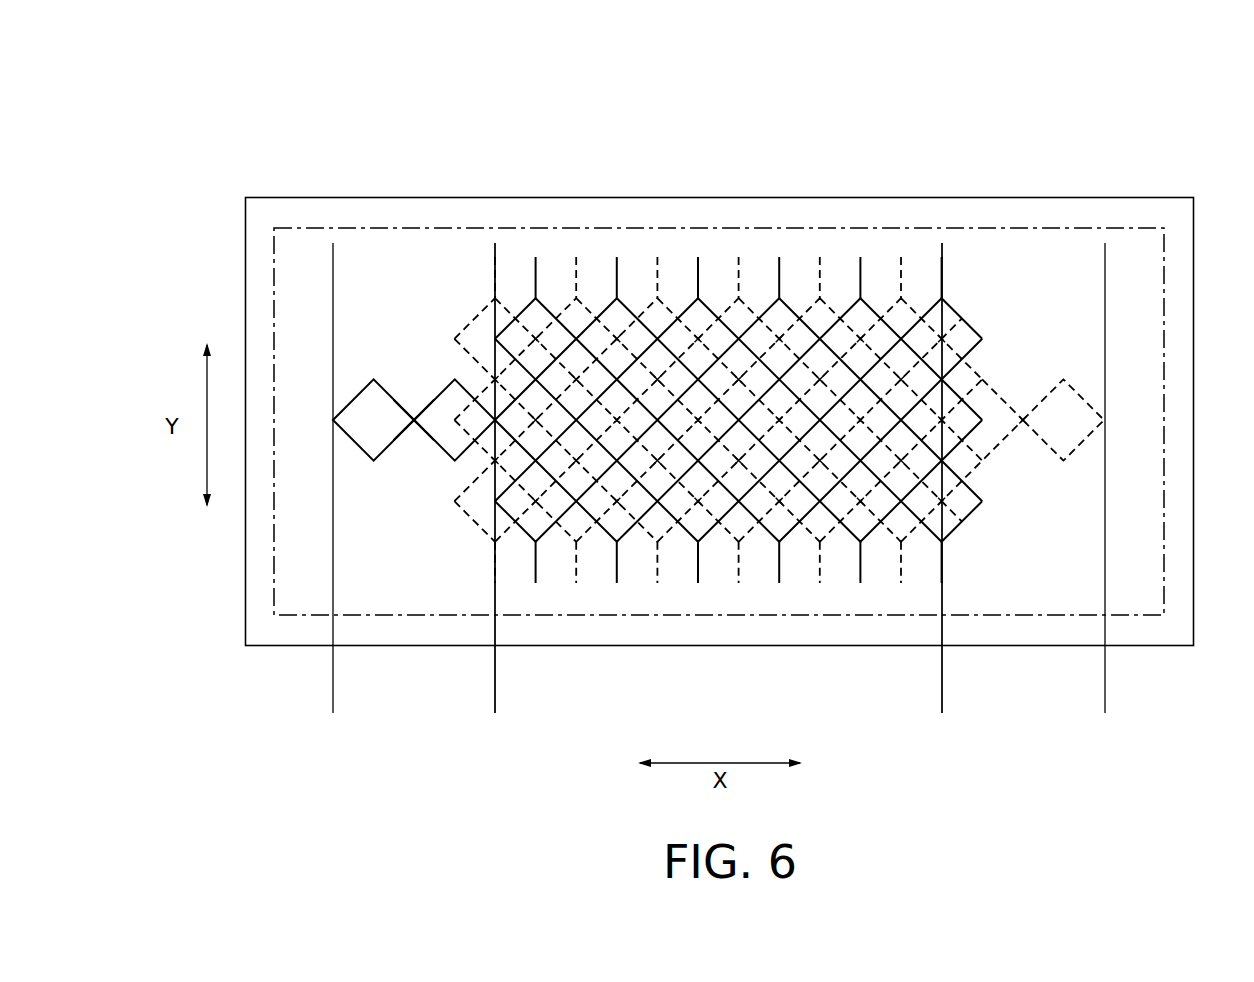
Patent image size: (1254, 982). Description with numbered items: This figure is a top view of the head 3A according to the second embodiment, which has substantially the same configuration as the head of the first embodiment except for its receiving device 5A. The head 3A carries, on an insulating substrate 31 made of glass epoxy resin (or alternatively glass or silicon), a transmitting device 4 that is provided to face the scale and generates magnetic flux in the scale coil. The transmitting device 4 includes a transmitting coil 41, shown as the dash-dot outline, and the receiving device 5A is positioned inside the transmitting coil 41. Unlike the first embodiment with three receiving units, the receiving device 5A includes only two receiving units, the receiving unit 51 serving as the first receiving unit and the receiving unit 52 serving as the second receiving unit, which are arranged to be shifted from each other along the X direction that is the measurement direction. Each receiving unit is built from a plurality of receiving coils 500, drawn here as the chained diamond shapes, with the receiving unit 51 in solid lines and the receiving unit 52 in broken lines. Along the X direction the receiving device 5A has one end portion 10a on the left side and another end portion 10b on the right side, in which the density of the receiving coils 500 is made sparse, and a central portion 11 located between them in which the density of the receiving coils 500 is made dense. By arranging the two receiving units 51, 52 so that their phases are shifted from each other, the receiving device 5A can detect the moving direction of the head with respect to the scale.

The head 3A is at (1165, 120).
The insulating substrate 31 is at (1033, 205).
The transmitting device 4 is at (893, 214).
The transmitting coil 41 is at (795, 227).
The receiving device 5A is at (1012, 317).
The receiving unit 51 is at (437, 392).
The receiving unit 52 is at (1002, 385).
The receiving coils 500 is at (428, 444).
The one end portion 10a is at (333, 686).
The central portion 11 is at (942, 686).
The other end portion 10b is at (1105, 686).